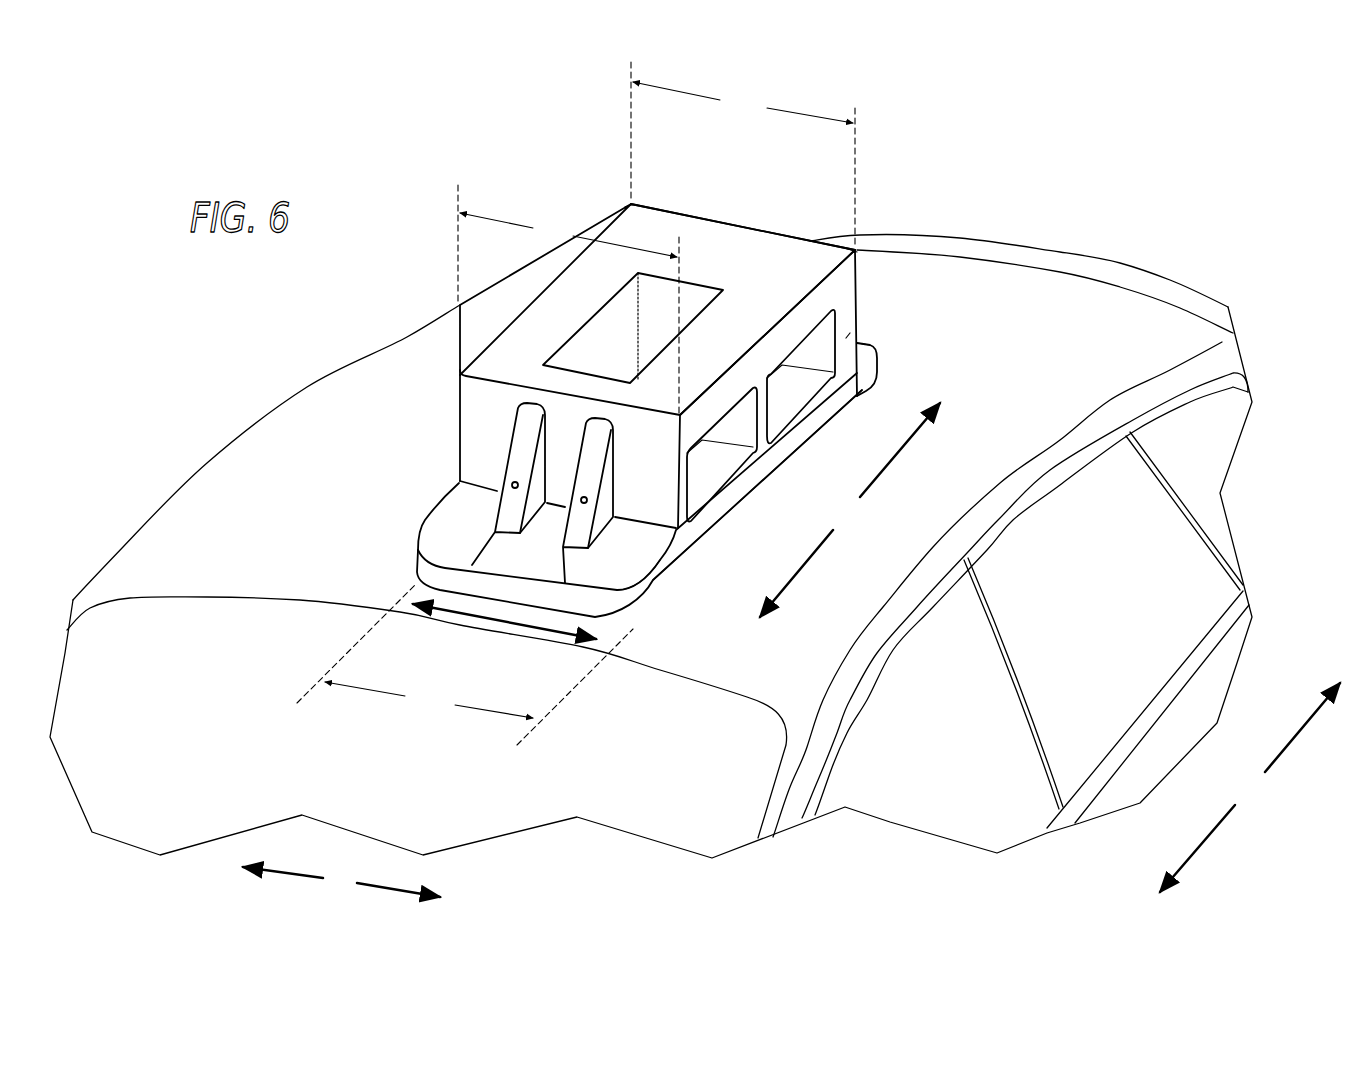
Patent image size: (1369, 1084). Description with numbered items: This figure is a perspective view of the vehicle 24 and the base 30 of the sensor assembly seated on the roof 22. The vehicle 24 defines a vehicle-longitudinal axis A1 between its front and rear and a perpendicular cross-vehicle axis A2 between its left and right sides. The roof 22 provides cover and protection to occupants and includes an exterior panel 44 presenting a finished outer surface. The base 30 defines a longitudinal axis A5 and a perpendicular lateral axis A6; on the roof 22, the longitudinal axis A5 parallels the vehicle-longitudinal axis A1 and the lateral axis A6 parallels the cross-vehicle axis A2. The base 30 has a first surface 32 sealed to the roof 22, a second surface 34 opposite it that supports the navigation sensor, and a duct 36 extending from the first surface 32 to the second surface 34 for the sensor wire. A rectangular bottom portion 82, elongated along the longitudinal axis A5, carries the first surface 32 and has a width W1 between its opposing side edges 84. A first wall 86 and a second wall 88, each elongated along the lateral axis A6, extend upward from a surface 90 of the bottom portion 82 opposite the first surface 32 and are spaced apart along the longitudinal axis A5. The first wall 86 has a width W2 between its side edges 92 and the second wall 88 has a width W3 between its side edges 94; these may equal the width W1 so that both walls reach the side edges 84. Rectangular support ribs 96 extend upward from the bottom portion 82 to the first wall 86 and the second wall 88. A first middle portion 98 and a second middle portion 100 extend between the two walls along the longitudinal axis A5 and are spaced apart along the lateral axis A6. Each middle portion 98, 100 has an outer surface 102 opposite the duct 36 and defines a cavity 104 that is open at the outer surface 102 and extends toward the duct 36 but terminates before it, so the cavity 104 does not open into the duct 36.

The roof 22 is at (1027, 287).
The vehicle 24 is at (1262, 327).
The base 30 is at (660, 366).
The first surface 32 is at (673, 583).
The second surface 34 is at (758, 243).
The duct 36 is at (703, 300).
The exterior panel 44 is at (1090, 323).
The bottom portion 82 is at (437, 537).
The side edges 84 is at (870, 360).
The first wall 86 is at (575, 387).
The second wall 88 is at (708, 228).
The surface 90 is at (867, 353).
The side edges 92 is at (458, 423).
The side edges 94 is at (629, 200).
The support ribs 96 is at (527, 438).
The first middle portion 98 is at (852, 262).
The second middle portion 100 is at (550, 303).
The outer surface 102 is at (787, 333).
The cavity 104 is at (793, 400).
The width W1 is at (465, 665).
The width W2 is at (568, 299).
The width W3 is at (743, 154).
The vehicle-longitudinal axis A1 is at (1250, 787).
The cross-vehicle axis A2 is at (341, 882).
The longitudinal axis A5 is at (850, 510).
The lateral axis A6 is at (500, 625).